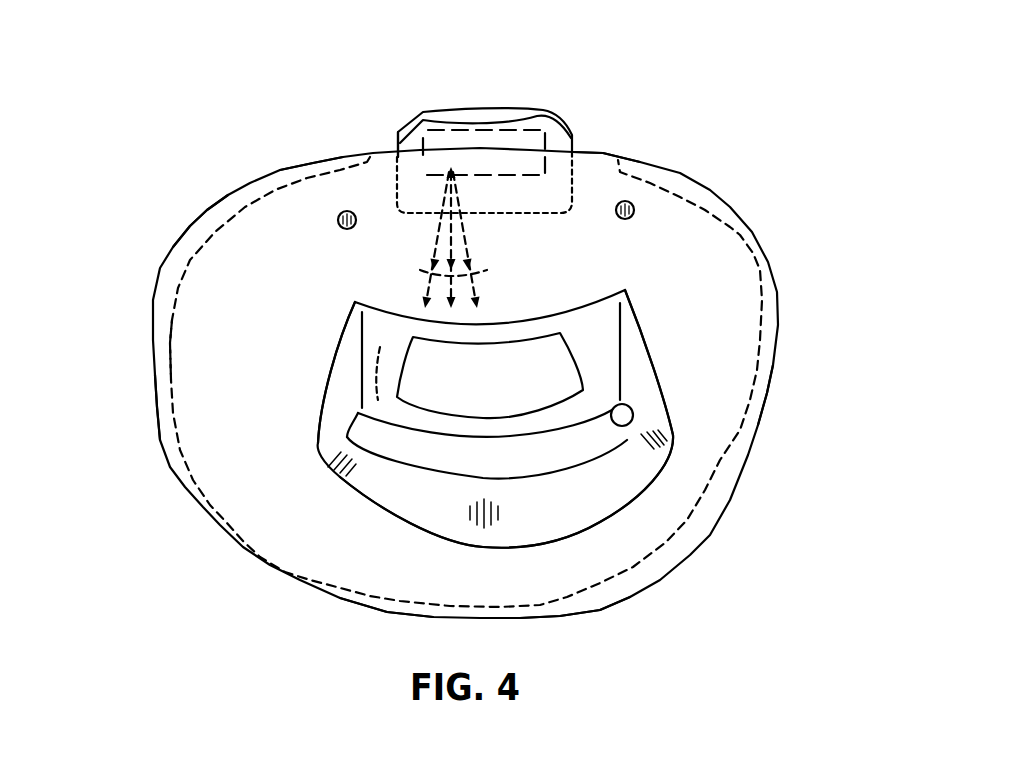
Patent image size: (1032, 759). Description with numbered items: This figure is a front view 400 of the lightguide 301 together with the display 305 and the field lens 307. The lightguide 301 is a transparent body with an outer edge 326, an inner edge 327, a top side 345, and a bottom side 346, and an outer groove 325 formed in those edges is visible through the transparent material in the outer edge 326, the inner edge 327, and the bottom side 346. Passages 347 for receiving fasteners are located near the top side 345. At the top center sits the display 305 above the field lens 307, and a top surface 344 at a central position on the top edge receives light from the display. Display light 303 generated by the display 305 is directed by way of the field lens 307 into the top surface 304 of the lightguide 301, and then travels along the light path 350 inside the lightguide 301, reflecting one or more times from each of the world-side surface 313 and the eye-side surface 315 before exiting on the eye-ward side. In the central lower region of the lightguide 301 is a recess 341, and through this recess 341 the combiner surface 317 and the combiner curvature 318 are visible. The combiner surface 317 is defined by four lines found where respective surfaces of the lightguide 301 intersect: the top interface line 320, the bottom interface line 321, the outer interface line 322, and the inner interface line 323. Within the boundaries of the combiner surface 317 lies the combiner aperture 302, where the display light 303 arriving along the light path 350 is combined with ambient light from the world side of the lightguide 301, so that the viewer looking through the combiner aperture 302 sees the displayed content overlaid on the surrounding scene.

The front view 400 is at (606, 108).
The lightguide 301 is at (356, 563).
The combiner aperture 302 is at (503, 391).
The display light 303 is at (468, 248).
The top surface 304 is at (581, 572).
The display 305 is at (487, 156).
The field lens 307 is at (397, 145).
The world-side surface 313 is at (301, 528).
The eye-side surface 315 is at (205, 210).
The combiner surface 317 is at (628, 410).
The combiner curvature 318 is at (384, 393).
The top interface line 320 is at (520, 322).
The bottom interface line 321 is at (538, 436).
The outer interface line 322 is at (354, 379).
The inner interface line 323 is at (631, 369).
The outer groove 325 is at (164, 343).
The outer edge 326 is at (157, 407).
The inner edge 327 is at (767, 393).
The recess 341 is at (605, 472).
The top surface 344 is at (313, 165).
The top side 345 is at (603, 153).
The bottom side 346 is at (390, 617).
The passages 347 is at (627, 223).
The light path 350 is at (432, 182).